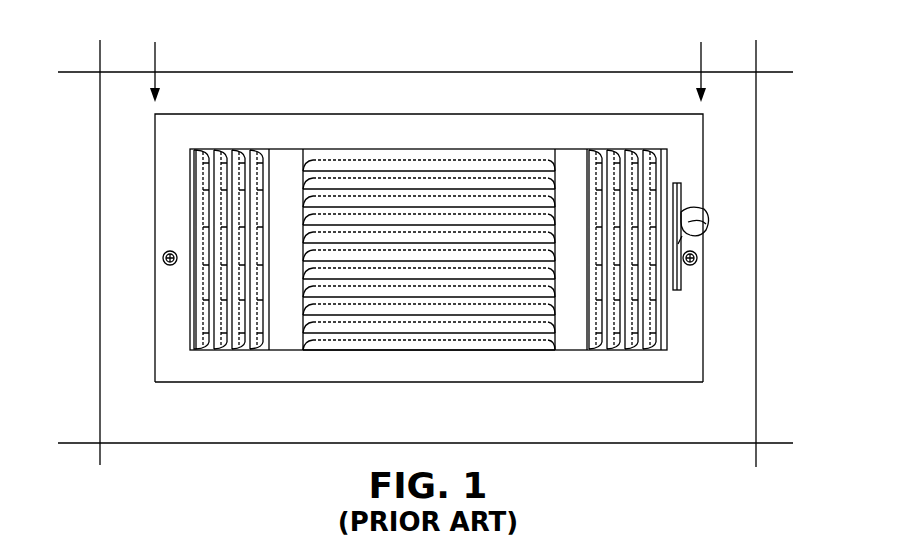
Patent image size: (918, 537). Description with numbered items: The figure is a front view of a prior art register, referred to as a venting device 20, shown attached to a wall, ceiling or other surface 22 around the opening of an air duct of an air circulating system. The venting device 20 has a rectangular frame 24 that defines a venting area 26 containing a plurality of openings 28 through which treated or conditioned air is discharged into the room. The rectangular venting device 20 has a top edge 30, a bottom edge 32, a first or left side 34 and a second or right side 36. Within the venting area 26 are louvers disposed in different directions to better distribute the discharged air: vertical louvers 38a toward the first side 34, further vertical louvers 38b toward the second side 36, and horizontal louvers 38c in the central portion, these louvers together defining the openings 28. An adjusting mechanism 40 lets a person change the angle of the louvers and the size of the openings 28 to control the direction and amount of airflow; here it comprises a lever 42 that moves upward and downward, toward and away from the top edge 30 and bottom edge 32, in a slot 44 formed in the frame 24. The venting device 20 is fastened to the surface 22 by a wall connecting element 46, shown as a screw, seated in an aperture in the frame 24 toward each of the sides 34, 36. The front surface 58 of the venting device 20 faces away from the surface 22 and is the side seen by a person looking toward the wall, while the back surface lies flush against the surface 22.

The venting device 20 is at (492, 142).
The wall, ceiling or other surface 22 is at (258, 90).
The frame 24 is at (657, 368).
The venting area 26 is at (361, 150).
The opening 28 is at (503, 312).
The top edge 30 is at (136, 129).
The bottom edge 32 is at (130, 383).
The first or left side 34 is at (155, 60).
The second or right side 36 is at (701, 60).
The vertical louvers 38a is at (220, 297).
The louvers 38b is at (640, 297).
The horizontal louvers 38c is at (323, 343).
The adjusting mechanism 40 is at (748, 194).
The lever 42 is at (695, 224).
The slot 44 is at (681, 186).
The wall connecting element 46 is at (163, 257).
The front surface 58 is at (174, 296).